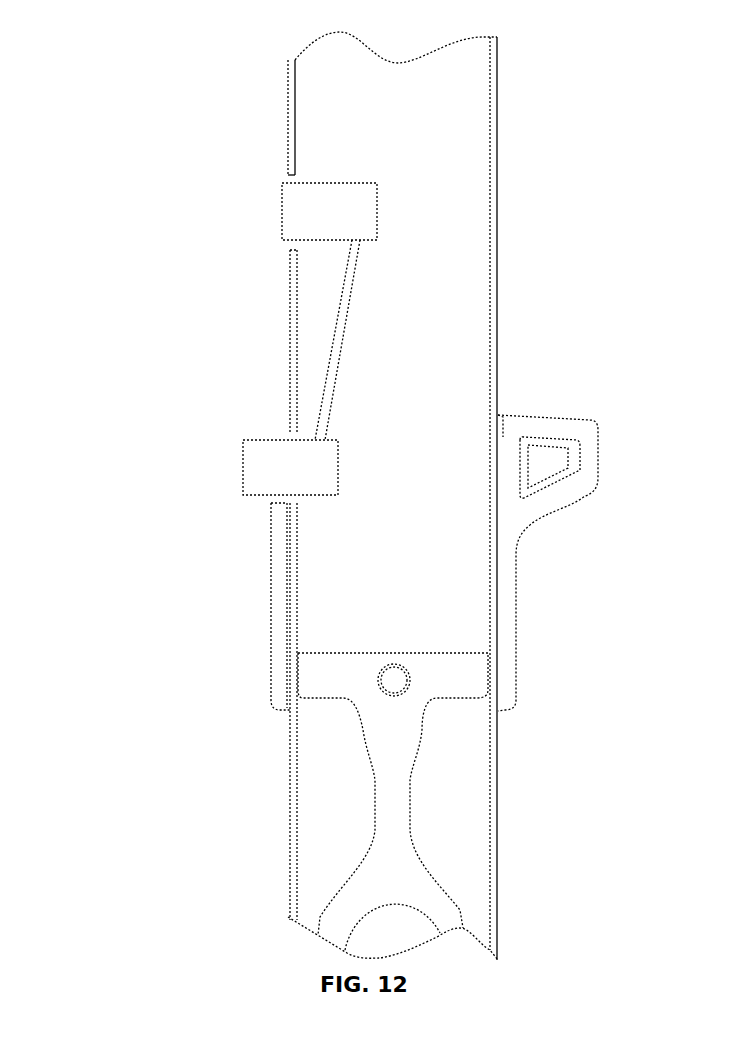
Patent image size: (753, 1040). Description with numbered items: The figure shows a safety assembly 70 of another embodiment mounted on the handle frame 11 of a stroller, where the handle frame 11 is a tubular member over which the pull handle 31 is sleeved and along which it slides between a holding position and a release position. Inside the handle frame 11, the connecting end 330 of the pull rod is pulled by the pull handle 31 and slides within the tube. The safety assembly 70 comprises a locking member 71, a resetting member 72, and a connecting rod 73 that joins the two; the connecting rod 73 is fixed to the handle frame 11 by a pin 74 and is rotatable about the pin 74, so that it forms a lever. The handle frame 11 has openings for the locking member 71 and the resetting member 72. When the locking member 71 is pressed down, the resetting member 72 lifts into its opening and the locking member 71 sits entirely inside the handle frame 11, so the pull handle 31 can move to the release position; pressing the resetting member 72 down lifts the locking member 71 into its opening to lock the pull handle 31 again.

The handle frame 11 is at (498, 787).
The pull handle 31 is at (520, 580).
The connecting end 330 is at (330, 680).
The safety assembly 70 is at (168, 320).
The locking member 71 is at (273, 470).
The resetting member 72 is at (300, 205).
The connecting rod 73 is at (348, 275).
The pin 74 is at (337, 330).